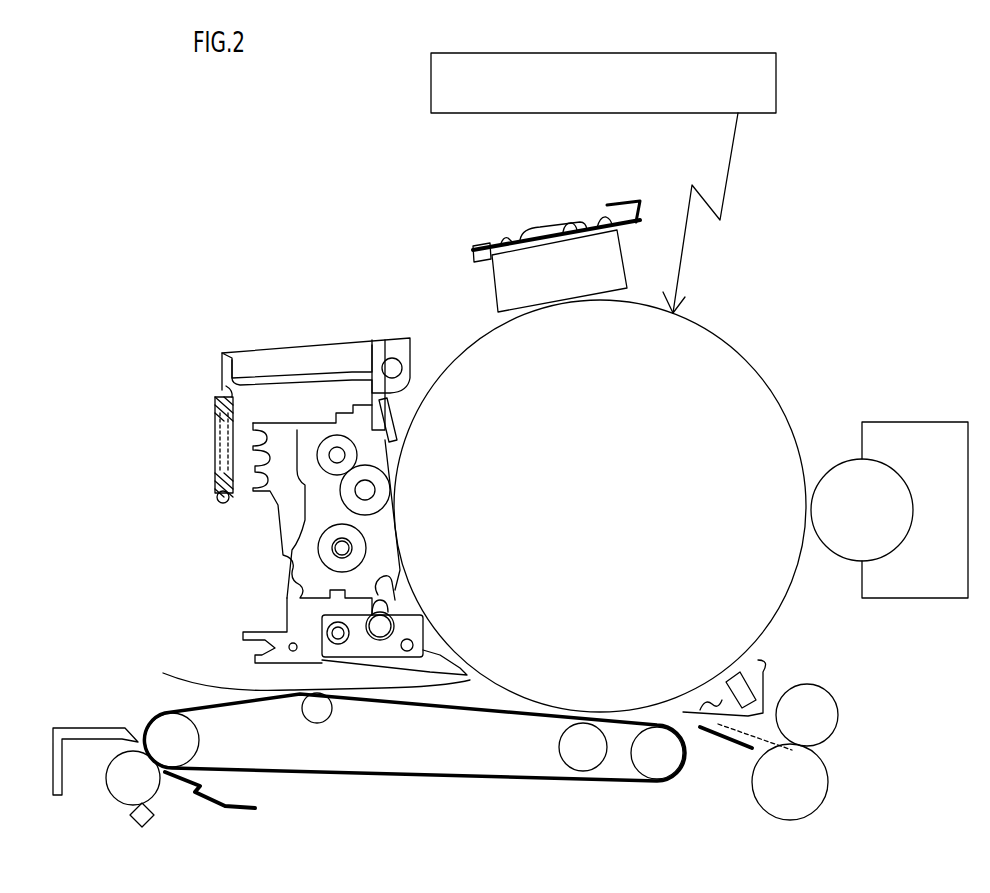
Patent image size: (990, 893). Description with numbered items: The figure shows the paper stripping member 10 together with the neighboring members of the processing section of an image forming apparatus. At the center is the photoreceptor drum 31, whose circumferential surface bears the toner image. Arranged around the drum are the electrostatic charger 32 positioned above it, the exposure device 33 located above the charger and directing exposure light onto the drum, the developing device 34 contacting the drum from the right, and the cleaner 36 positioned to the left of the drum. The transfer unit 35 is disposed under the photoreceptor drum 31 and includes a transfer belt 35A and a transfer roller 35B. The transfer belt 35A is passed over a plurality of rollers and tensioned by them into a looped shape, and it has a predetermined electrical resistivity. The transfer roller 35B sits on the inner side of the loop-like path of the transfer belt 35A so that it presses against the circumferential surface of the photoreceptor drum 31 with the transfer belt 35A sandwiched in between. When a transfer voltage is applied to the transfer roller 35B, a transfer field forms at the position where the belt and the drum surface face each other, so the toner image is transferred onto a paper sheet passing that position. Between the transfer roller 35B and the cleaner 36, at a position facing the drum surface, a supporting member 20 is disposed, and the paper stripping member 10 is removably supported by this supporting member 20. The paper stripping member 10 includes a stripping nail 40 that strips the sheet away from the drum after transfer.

The paper stripping member 10 is at (470, 680).
The supporting member 20 is at (285, 623).
The photoreceptor drum 31 is at (752, 367).
The electrostatic charger 32 is at (490, 252).
The exposure device 33 is at (778, 61).
The developing device 34 is at (933, 421).
The transfer unit 35 is at (414, 775).
The transfer belt 35A is at (520, 784).
The transfer roller 35B is at (561, 737).
The cleaner 36 is at (355, 335).
The stripping nail 40 is at (304, 674).